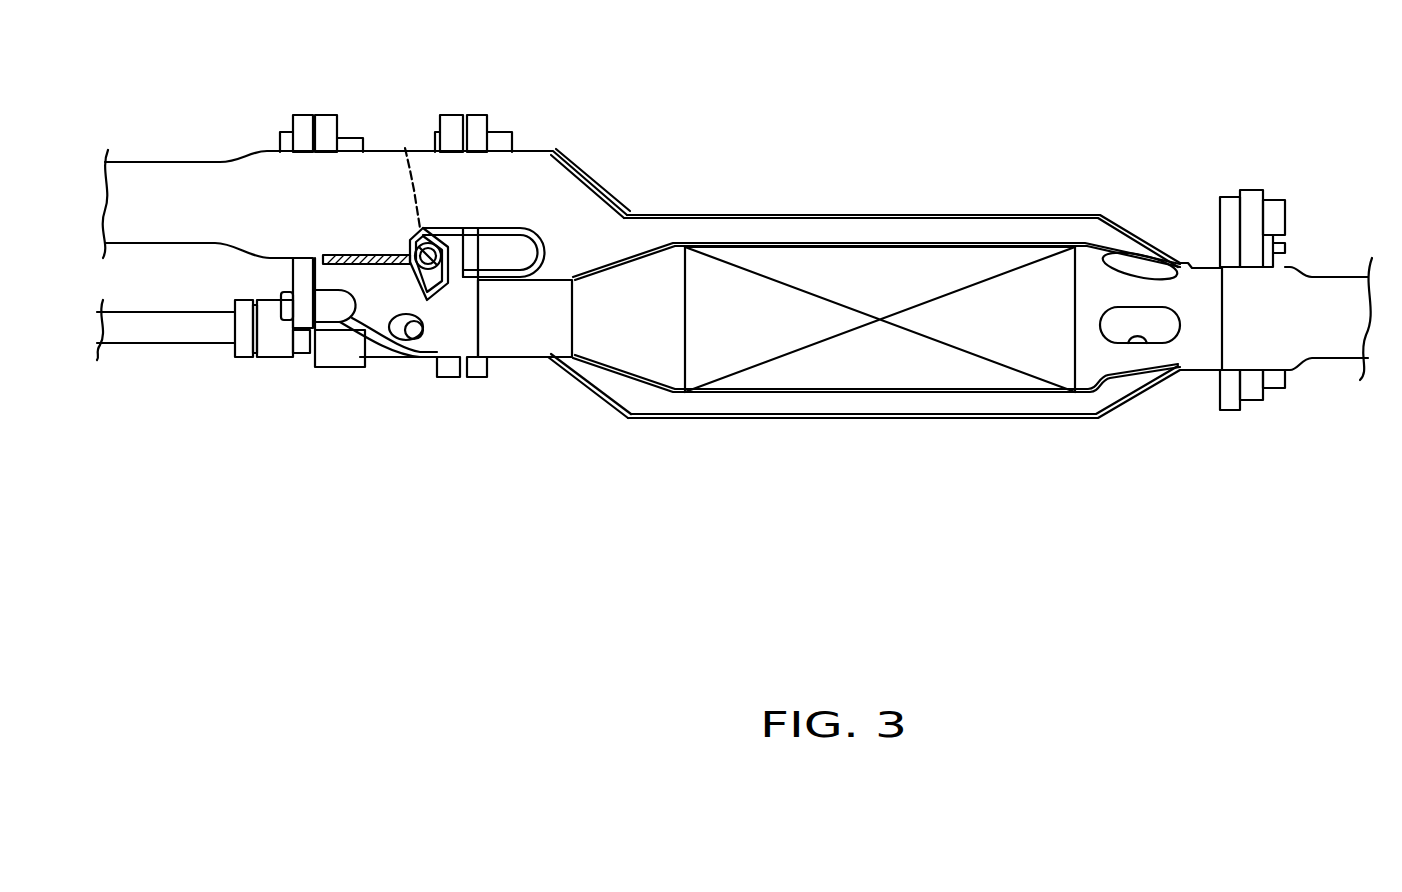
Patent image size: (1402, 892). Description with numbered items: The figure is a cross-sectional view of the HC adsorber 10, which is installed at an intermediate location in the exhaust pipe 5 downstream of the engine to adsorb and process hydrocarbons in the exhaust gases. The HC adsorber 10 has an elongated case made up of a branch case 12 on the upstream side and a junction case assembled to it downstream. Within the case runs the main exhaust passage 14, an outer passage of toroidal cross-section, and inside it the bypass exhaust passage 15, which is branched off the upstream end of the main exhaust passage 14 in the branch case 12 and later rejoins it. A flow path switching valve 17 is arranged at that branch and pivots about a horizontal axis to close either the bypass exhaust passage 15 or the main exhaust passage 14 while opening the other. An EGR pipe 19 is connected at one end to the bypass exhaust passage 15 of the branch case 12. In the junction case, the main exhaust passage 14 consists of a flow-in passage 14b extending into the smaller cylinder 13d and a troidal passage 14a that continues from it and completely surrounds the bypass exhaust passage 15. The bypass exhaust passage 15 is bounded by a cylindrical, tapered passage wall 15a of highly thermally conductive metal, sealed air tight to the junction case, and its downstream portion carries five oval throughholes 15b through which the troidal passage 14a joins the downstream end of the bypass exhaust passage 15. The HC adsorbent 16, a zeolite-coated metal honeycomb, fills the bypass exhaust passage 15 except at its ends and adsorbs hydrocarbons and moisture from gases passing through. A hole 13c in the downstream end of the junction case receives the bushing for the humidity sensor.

The exhaust pipe 5 is at (164, 162).
The HC adsorber 10 is at (782, 287).
The branch case 12 is at (410, 359).
The hole 13c is at (752, 213).
The smaller cylinder 13d is at (556, 149).
The main exhaust passage 14 is at (830, 313).
The troidal passage 14a is at (808, 231).
The flow-in passage 14b is at (540, 205).
The bypass exhaust passage 15 is at (504, 327).
The passage wall 15a is at (847, 392).
The oval throughholes 15b is at (1127, 262).
The HC adsorbent 16 is at (931, 373).
The flow path switching valve 17 is at (367, 255).
The EGR pipe 19 is at (137, 345).